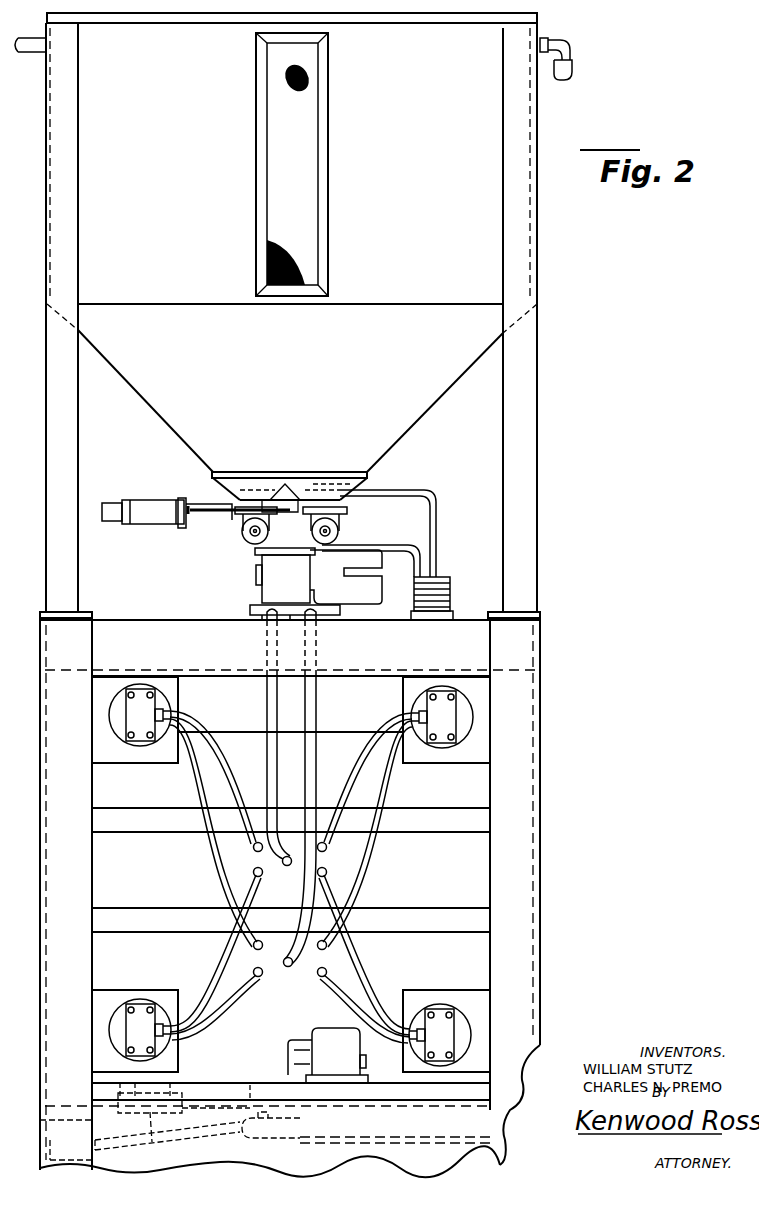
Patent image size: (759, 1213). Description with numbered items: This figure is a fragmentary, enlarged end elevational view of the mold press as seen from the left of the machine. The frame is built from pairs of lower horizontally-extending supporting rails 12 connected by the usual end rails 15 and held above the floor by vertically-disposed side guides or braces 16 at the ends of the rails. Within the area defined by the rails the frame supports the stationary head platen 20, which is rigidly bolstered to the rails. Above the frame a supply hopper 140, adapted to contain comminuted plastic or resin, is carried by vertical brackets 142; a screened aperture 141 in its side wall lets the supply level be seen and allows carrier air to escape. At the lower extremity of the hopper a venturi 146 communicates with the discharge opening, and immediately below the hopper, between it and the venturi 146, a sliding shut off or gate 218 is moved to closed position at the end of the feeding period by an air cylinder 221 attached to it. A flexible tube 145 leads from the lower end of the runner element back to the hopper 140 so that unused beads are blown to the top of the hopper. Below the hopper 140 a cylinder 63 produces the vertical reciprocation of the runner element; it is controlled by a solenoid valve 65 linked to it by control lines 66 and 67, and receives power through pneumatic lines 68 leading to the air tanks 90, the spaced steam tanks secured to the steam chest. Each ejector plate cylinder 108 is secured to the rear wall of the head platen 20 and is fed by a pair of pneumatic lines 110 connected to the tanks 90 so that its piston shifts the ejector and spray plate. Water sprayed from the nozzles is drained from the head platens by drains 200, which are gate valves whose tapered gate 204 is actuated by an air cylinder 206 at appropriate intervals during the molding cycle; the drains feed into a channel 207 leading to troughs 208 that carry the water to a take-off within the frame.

The lower horizontally-extending supporting rail 12 is at (472, 1103).
The end rail 15 is at (368, 667).
The side guide or brace 16 is at (46, 834).
The stationary head platen 20 is at (228, 690).
The cylinder 63 is at (280, 542).
The solenoid valve 65 is at (450, 579).
The control line 66 is at (424, 490).
The control line 67 is at (412, 545).
The pneumatic line 68 is at (308, 743).
The steam tank 90 is at (430, 875).
The ejector plate cylinder 108 is at (110, 715).
The pneumatic line 110 is at (354, 782).
The supply hopper 140 is at (394, 151).
The screened aperture 141 is at (268, 103).
The vertical bracket 142 is at (46, 403).
The flexible tube 145 is at (573, 68).
The venturi 146 is at (340, 531).
The drain 200 is at (188, 1085).
The tapered gate 204 is at (162, 1135).
The air cylinder 206 is at (292, 1042).
The channel 207 is at (232, 1134).
The trough 208 is at (318, 1140).
The sliding shut off or gate 218 is at (218, 512).
The air cylinder 221 is at (143, 524).